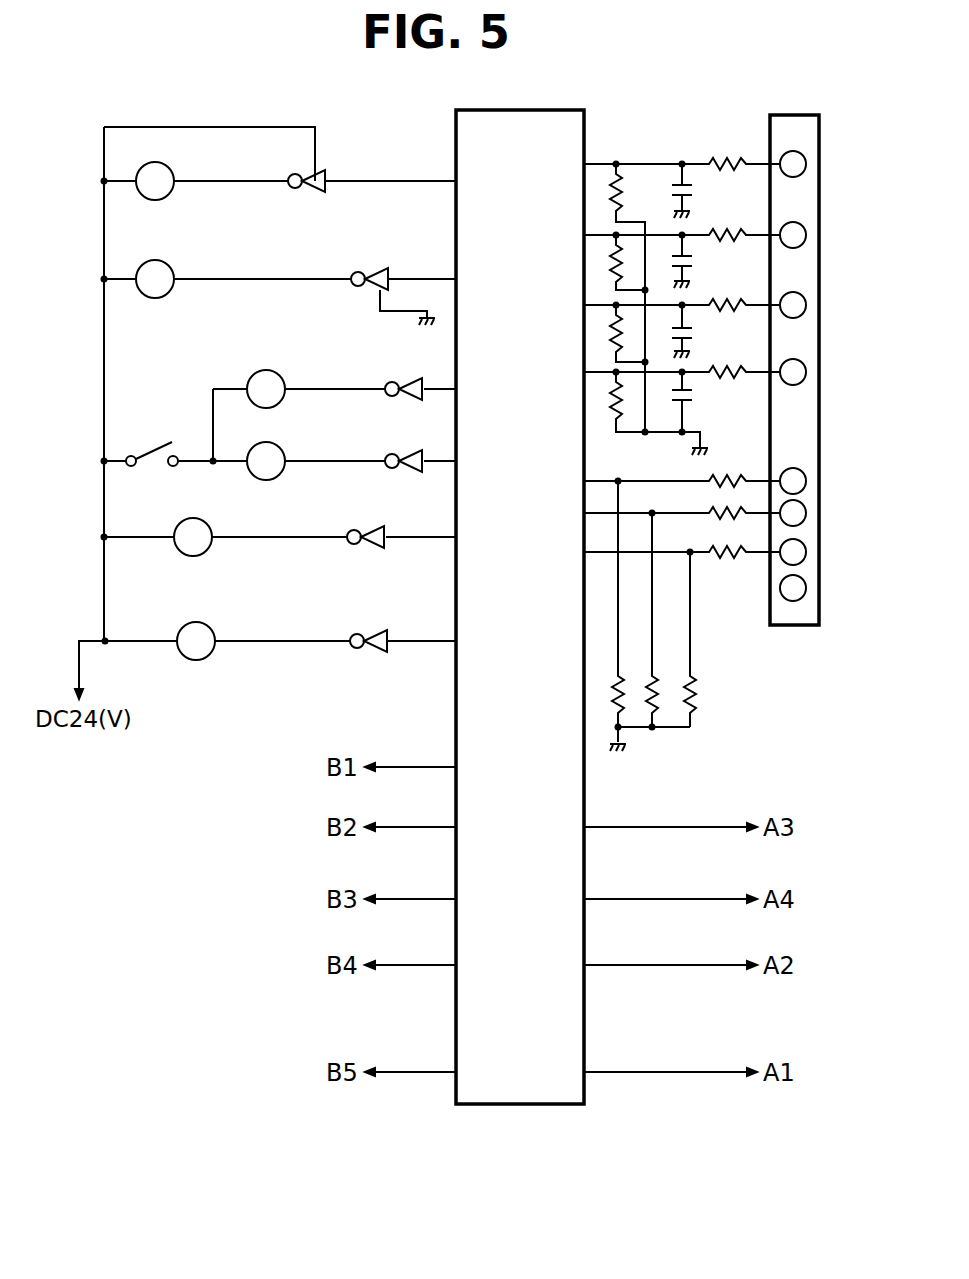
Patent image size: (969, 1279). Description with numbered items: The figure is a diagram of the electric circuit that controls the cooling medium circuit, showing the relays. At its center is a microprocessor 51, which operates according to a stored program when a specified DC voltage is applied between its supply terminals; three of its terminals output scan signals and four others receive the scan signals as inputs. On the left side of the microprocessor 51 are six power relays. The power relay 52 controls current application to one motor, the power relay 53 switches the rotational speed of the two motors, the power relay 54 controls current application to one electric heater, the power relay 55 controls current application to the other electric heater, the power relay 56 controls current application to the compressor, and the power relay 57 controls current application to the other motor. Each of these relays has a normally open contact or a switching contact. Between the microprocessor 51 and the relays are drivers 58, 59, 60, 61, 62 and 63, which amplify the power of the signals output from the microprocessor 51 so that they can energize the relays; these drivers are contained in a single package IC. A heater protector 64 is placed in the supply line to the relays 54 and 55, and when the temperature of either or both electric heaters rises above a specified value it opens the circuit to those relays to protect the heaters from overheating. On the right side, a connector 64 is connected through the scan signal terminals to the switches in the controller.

The microprocessor 51 is at (582, 130).
The power relay 52 is at (170, 193).
The power relay 53 is at (170, 266).
The power relay 54 is at (266, 370).
The power relay 55 is at (281, 448).
The power relay 56 is at (207, 523).
The power relay 57 is at (210, 628).
The driver 58 is at (318, 170).
The driver 59 is at (383, 268).
The driver 60 is at (416, 378).
The driver 61 is at (416, 450).
The driver 62 is at (370, 526).
The driver 63 is at (374, 630).
The heater protector / connector 64 is at (150, 446).